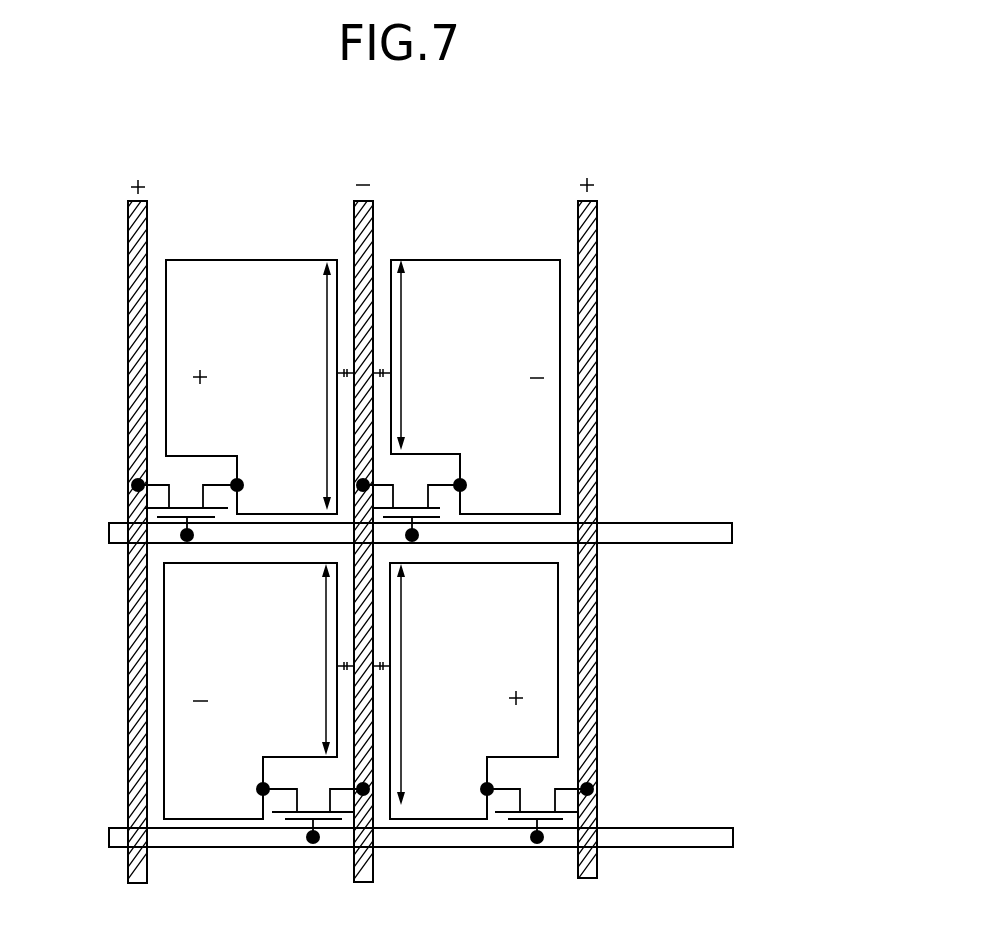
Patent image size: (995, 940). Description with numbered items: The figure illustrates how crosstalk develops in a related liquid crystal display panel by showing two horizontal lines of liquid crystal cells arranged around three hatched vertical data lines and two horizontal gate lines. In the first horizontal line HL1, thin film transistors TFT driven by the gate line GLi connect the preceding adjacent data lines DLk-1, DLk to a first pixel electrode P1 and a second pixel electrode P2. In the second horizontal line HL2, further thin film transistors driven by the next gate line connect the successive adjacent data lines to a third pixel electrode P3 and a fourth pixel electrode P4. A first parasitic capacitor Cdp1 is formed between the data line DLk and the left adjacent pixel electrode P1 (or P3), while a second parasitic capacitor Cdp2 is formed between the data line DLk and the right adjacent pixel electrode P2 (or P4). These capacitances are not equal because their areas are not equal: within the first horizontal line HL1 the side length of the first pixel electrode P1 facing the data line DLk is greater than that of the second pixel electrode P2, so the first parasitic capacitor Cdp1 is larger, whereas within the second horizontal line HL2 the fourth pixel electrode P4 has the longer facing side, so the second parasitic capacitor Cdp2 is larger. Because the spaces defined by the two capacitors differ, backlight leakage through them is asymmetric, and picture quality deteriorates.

The data line DLk-1 is at (141, 548).
The data line DLk is at (366, 549).
The gate line GLi is at (442, 532).
The first horizontal line HL1 is at (385, 441).
The second horizontal line HL2 is at (385, 766).
The first pixel electrode P1 is at (251, 387).
The second pixel electrode P2 is at (475, 387).
The third pixel electrode P3 is at (250, 691).
The fourth pixel electrode P4 is at (474, 691).
The thin film transistor TFT is at (362, 651).
The first parasitic capacitor Cdp1 is at (308, 521).
The second parasitic capacitor Cdp2 is at (421, 521).